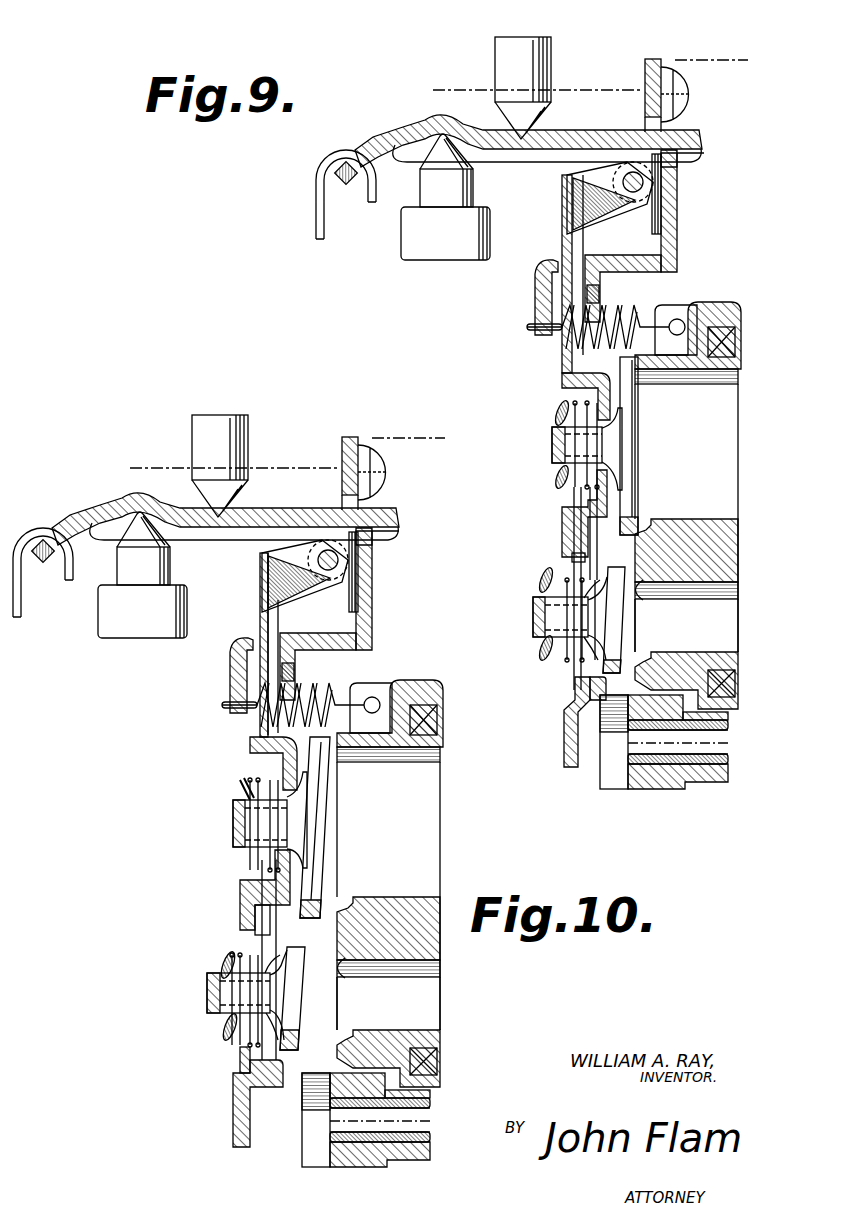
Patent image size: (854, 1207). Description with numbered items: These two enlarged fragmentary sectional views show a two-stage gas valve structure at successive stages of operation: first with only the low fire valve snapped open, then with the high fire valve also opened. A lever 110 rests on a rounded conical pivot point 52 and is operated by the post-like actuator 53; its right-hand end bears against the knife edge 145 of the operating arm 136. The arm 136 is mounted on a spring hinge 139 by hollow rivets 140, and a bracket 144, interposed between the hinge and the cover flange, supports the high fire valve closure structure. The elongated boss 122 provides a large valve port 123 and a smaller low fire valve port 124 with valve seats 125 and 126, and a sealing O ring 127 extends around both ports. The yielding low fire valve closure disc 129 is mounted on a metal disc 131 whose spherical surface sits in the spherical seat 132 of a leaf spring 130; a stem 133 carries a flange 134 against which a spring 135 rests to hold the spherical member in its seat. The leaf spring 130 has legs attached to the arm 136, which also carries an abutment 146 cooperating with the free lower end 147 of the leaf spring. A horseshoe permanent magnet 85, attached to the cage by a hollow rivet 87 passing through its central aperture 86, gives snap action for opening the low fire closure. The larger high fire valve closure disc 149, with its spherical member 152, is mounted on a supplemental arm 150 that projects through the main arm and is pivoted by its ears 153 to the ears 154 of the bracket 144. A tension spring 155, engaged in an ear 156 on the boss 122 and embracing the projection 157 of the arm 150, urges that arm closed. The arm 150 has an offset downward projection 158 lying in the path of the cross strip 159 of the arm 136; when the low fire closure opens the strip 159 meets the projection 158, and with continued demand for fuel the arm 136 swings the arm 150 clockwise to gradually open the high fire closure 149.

In FIG. 9, the conical pivot point 52 is at (125, 566).
In FIG. 10, the conical pivot point 52 is at (438, 150).
In FIG. 9, the actuator 53 is at (196, 437).
In FIG. 10, the actuator 53 is at (498, 64).
In FIG. 9, the horseshoe permanent magnet 85 is at (356, 1165).
In FIG. 10, the horseshoe permanent magnet 85 is at (666, 788).
In FIG. 9, the central aperture 86 is at (334, 1104).
In FIG. 10, the central aperture 86 is at (710, 726).
In FIG. 9, the hollow rivet 87 is at (431, 1118).
In FIG. 10, the hollow rivet 87 is at (723, 752).
In FIG. 9, the operating lever 110 is at (277, 507).
In FIG. 10, the operating lever 110 is at (576, 129).
In FIG. 9, the boss 122 is at (378, 733).
In FIG. 10, the boss 122 is at (683, 355).
In FIG. 9, the large valve port 123 is at (442, 760).
In FIG. 10, the large valve port 123 is at (736, 385).
In FIG. 9, the low fire valve port 124 is at (441, 968).
In FIG. 10, the low fire valve port 124 is at (736, 596).
In FIG. 9, the valve seat 125 is at (340, 757).
In FIG. 10, the valve seat 125 is at (640, 380).
In FIG. 9, the valve seat 126 is at (342, 966).
In FIG. 10, the valve seat 126 is at (640, 590).
In FIG. 9, the sealing O ring 127 is at (440, 722).
In FIG. 10, the sealing O ring 127 is at (738, 342).
In FIG. 9, the low fire valve closure disc 129 is at (285, 958).
In FIG. 10, the low fire valve closure disc 129 is at (608, 570).
In FIG. 9, the leaf spring 130 is at (272, 945).
In FIG. 9, the metal disc 131 is at (288, 1017).
In FIG. 10, the metal disc 131 is at (608, 642).
In FIG. 9, the spherical seat 132 is at (279, 975).
In FIG. 10, the spherical seat 132 is at (592, 618).
In FIG. 9, the stem 133 is at (233, 993).
In FIG. 10, the stem 133 is at (540, 612).
In FIG. 9, the flange 134 is at (225, 1030).
In FIG. 10, the flange 134 is at (540, 648).
In FIG. 9, the spring 135 is at (230, 1043).
In FIG. 10, the spring 135 is at (550, 660).
In FIG. 9, the operating arm 136 is at (312, 636).
In FIG. 10, the operating arm 136 is at (588, 278).
In FIG. 9, the spring hinge 139 is at (378, 462).
In FIG. 10, the spring hinge 139 is at (684, 80).
In FIG. 9, the hollow rivets 140 is at (374, 603).
In FIG. 10, the hollow rivets 140 is at (692, 196).
In FIG. 9, the bracket 144 is at (340, 450).
In FIG. 10, the bracket 144 is at (644, 76).
In FIG. 9, the knife edge 145 is at (380, 530).
In FIG. 10, the knife edge 145 is at (692, 152).
In FIG. 9, the abutment 146 is at (288, 1064).
In FIG. 10, the abutment 146 is at (608, 694).
In FIG. 9, the free lower end 147 is at (244, 1068).
In FIG. 9, the high fire valve closure disc 149 is at (323, 813).
In FIG. 10, the high fire valve closure disc 149 is at (634, 432).
In FIG. 9, the arm 150 is at (252, 748).
In FIG. 10, the arm 150 is at (560, 378).
In FIG. 9, the spherical member 152 is at (297, 835).
In FIG. 10, the spherical member 152 is at (614, 456).
In FIG. 9, the ears 153 is at (265, 568).
In FIG. 10, the ears 153 is at (600, 220).
In FIG. 9, the ears 154 is at (345, 575).
In FIG. 10, the ears 154 is at (657, 205).
In FIG. 9, the tension spring 155 is at (314, 688).
In FIG. 10, the tension spring 155 is at (620, 310).
In FIG. 9, the ear 156 is at (378, 684).
In FIG. 10, the ear 156 is at (680, 303).
In FIG. 9, the projection 157 is at (232, 673).
In FIG. 10, the projection 157 is at (535, 303).
In FIG. 9, the projection 158 is at (240, 900).
In FIG. 10, the projection 158 is at (562, 522).
In FIG. 9, the cross strip 159 is at (256, 933).
In FIG. 10, the cross strip 159 is at (570, 556).